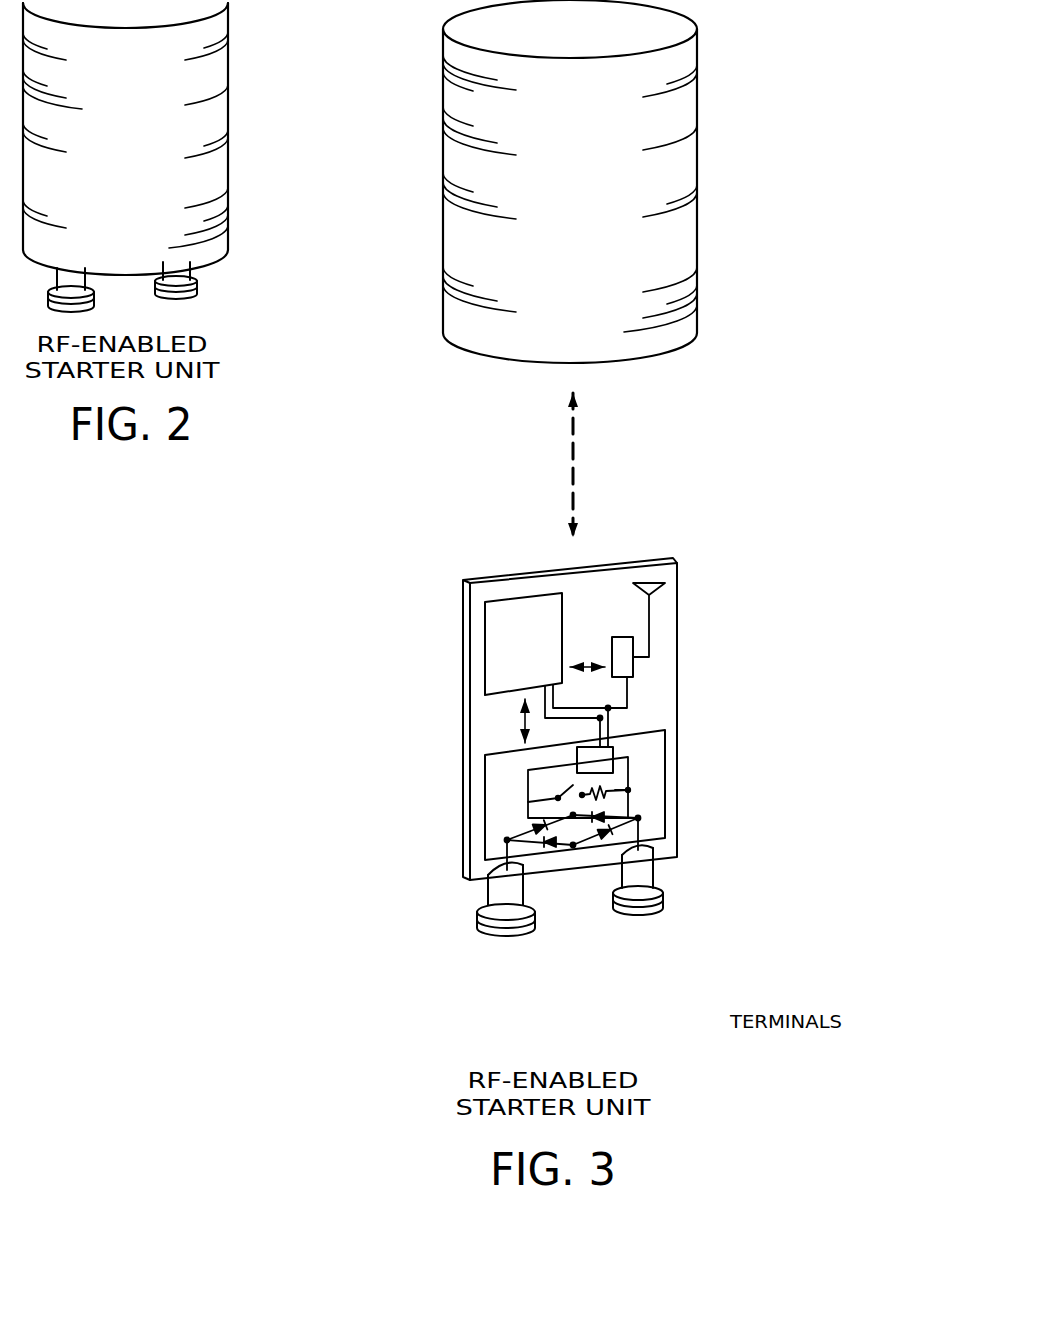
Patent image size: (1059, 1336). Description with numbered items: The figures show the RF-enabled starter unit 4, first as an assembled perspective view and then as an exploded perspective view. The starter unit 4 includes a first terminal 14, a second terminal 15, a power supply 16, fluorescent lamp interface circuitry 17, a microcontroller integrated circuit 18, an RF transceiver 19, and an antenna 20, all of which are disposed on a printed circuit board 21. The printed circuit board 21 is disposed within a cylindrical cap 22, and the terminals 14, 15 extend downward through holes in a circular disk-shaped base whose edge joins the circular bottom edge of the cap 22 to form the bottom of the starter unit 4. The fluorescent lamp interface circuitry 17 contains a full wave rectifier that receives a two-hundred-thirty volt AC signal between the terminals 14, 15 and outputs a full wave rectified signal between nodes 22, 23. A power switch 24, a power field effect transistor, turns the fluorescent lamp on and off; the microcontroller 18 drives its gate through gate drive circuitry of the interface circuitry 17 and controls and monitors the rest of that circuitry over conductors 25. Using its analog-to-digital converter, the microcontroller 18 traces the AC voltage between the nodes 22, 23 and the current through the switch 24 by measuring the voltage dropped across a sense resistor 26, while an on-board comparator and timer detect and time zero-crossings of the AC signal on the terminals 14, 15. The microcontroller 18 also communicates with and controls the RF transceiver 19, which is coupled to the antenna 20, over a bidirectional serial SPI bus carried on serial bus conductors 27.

In FIG. 2, the RF-enabled starter unit 4 is at (267, 30).
In FIG. 3, the RF-enabled starter unit 4 is at (780, 563).
In FIG. 3, the first terminal 14 is at (703, 1032).
In FIG. 3, the second terminal 15 is at (703, 1020).
In FIG. 3, the power supply 16 is at (732, 738).
In FIG. 3, the fluorescent lamp interface circuitry 17 is at (485, 808).
In FIG. 3, the microcontroller integrated circuit 18 is at (485, 660).
In FIG. 3, the RF transceiver 19 is at (647, 675).
In FIG. 3, the antenna 20 is at (655, 618).
In FIG. 3, the printed circuit board 21 is at (677, 566).
In FIG. 3, the cylindrical cap 22 is at (528, 802).
In FIG. 3, the node 23 is at (628, 790).
In FIG. 3, the power switch 24 is at (566, 787).
In FIG. 3, the conductors 25 is at (525, 718).
In FIG. 3, the sense resistor 26 is at (605, 791).
In FIG. 3, the serial bus conductors 27 is at (585, 667).